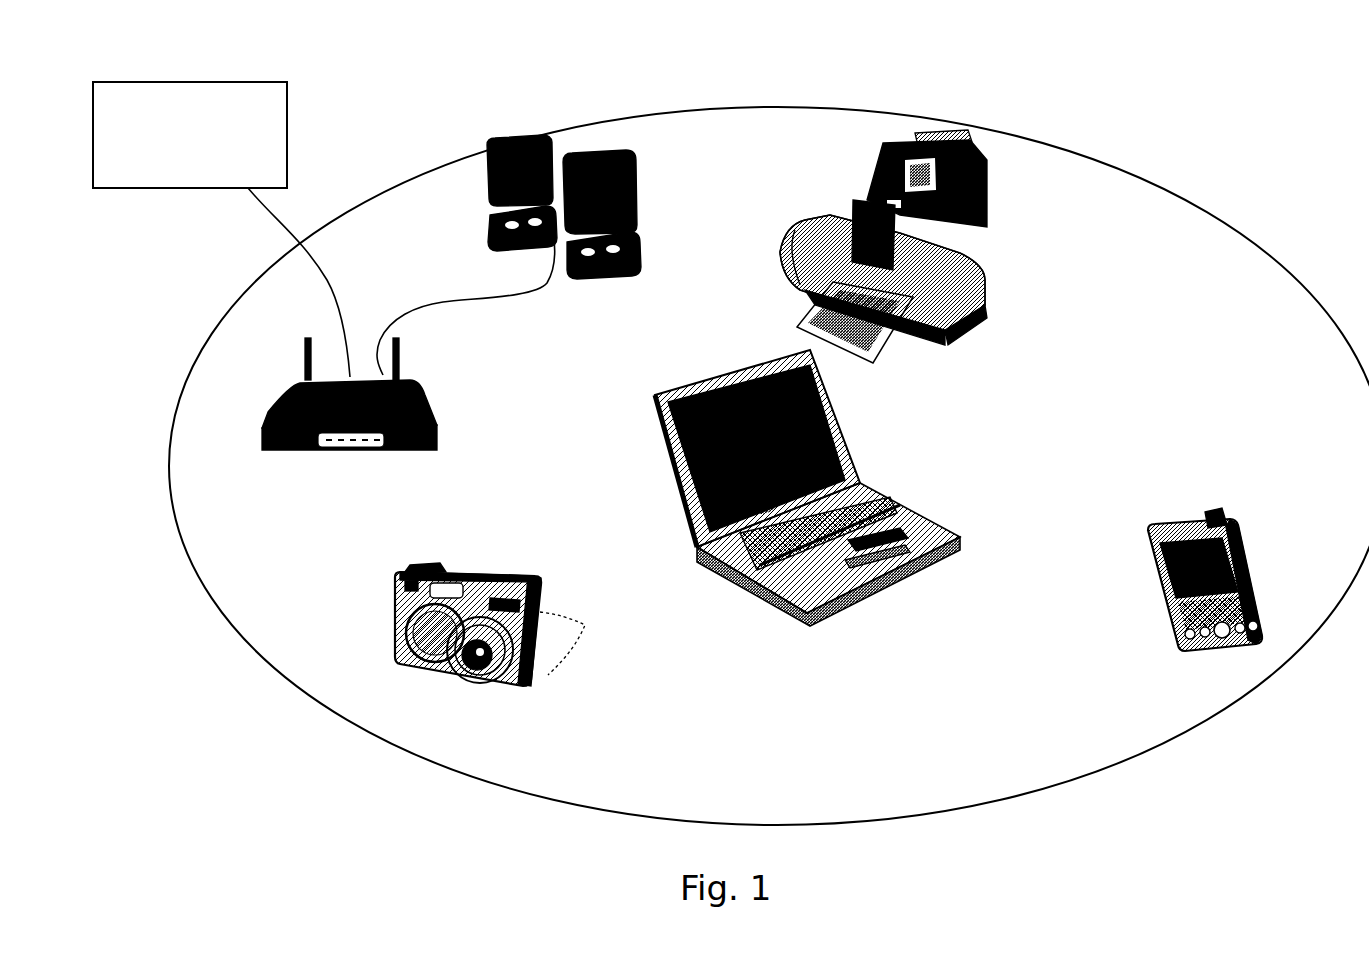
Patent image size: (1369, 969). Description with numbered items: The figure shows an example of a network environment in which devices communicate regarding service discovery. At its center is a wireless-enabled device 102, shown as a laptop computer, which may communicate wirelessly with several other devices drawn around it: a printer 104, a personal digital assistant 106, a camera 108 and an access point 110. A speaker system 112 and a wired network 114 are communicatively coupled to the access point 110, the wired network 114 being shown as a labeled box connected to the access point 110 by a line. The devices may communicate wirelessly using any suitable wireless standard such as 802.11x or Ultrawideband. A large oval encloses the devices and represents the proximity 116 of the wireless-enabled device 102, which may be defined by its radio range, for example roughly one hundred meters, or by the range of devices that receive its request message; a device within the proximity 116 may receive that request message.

The wireless-enabled device 102 is at (900, 503).
The printer 104 is at (990, 243).
The personal digital assistant (PDA) 106 is at (1227, 510).
The camera 108 is at (507, 570).
The access point 110 is at (432, 413).
The speaker system 112 is at (637, 170).
The wired network 114 is at (157, 82).
The proximity 116 is at (1120, 172).